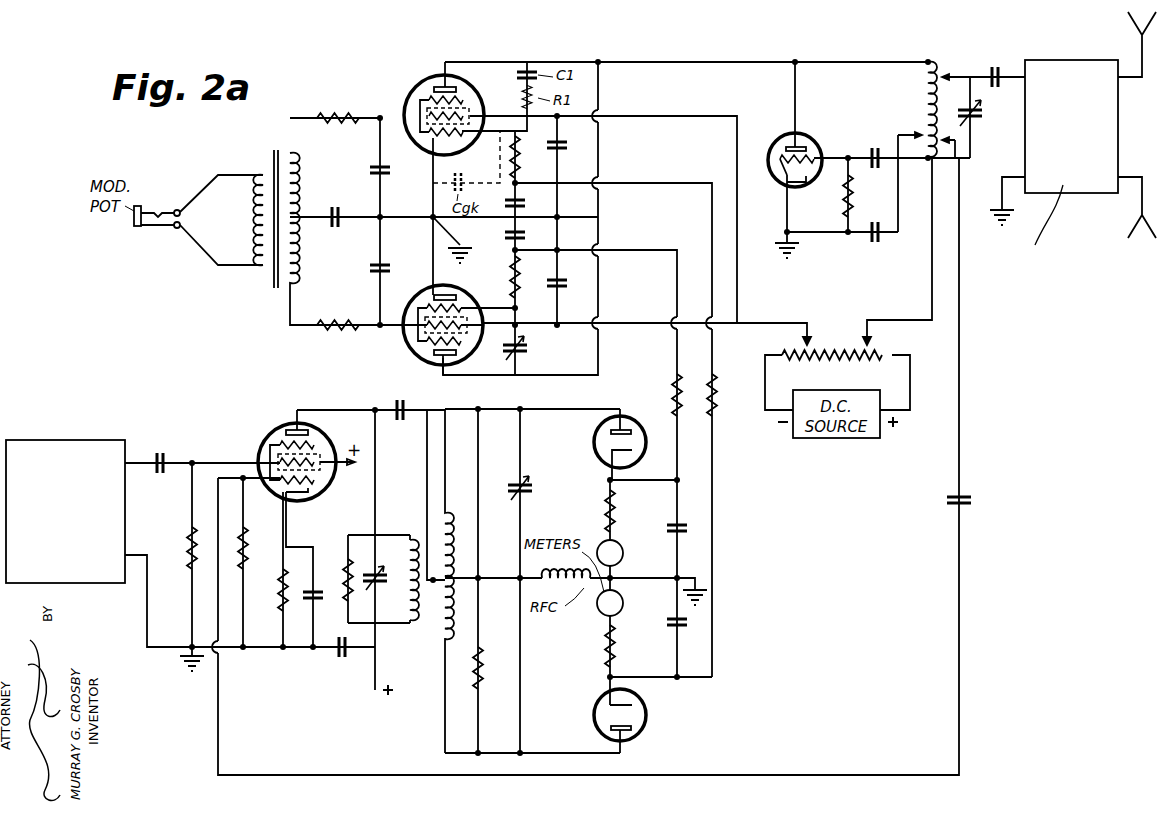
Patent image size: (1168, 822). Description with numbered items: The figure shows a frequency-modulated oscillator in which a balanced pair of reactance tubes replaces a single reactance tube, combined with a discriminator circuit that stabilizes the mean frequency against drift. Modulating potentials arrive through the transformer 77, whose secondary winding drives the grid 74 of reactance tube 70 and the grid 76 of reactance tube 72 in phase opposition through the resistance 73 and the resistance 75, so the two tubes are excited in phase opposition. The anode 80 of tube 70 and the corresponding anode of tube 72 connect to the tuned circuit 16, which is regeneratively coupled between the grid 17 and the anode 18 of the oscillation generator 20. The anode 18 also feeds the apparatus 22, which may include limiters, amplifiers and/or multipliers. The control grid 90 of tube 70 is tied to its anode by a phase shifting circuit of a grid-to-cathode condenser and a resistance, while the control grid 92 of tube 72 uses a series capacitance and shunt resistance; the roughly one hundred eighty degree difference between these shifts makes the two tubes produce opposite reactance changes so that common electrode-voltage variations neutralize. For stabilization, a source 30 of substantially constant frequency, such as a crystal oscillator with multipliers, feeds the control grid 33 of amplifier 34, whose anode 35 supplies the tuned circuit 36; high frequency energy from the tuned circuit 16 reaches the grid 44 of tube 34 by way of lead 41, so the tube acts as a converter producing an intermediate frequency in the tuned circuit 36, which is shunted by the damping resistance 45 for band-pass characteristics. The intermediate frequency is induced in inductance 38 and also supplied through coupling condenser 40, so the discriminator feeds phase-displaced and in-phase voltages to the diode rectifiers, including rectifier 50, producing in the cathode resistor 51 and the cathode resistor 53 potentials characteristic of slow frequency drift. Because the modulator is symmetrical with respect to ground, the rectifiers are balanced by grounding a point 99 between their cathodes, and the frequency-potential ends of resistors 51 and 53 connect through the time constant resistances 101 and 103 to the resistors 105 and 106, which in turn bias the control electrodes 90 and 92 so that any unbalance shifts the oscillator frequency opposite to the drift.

The tuned circuit 16 is at (954, 88).
The grid 17 is at (784, 180).
The anode 18 is at (810, 127).
The oscillation generator 20 is at (783, 137).
The apparatus 22 is at (1074, 62).
The source of oscillations of substantially constant frequency 30 is at (61, 440).
The grid of tube 34 33 is at (262, 460).
The amplifier 34 is at (268, 440).
The anode 35 is at (287, 428).
The tuned circuit 36 is at (392, 612).
The inductance 38 is at (448, 518).
The coupling condenser 40 is at (400, 425).
The lead 41 is at (962, 460).
The grid 44 is at (316, 480).
The damping resistance 45 is at (350, 560).
The diode rectifier 50 is at (675, 347).
The cathode resistor 51 is at (714, 350).
The cathode resistor 53 is at (605, 654).
The reactance tube 70 is at (434, 80).
The reactance tube 72 is at (422, 361).
The resistance 73 is at (346, 116).
The grid 74 is at (428, 104).
The resistance 75 is at (331, 334).
The grid 76 is at (428, 330).
The transformer 77 is at (273, 160).
The anode 80 is at (460, 91).
The control grid 90 is at (456, 134).
The control grid 92 is at (459, 306).
The point 99 is at (688, 577).
The time constant resistance 101 is at (672, 398).
The time constant resistance 103 is at (716, 400).
The resistor 105 is at (518, 162).
The resistor 106 is at (518, 262).